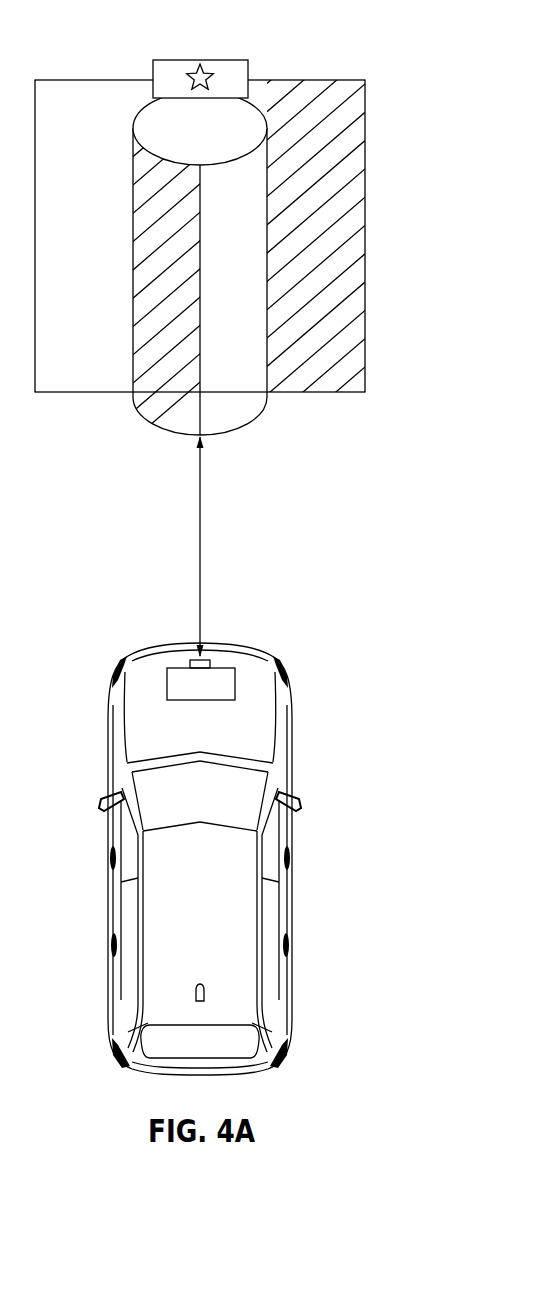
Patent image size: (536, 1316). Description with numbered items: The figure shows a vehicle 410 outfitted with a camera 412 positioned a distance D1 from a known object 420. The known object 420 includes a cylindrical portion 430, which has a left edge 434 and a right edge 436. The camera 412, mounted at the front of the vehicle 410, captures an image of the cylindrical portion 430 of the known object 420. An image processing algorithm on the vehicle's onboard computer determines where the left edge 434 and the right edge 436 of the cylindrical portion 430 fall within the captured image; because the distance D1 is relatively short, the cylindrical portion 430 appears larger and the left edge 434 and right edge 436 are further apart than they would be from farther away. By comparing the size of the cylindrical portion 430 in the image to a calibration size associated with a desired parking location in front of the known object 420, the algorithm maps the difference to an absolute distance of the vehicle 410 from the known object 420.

The known object 420 is at (121, 37).
The cylindrical portion 430 is at (235, 293).
The left edge 434 is at (130, 411).
The right edge 436 is at (270, 411).
The distance D1 is at (200, 541).
The camera 412 is at (222, 666).
The vehicle 410 is at (115, 1027).